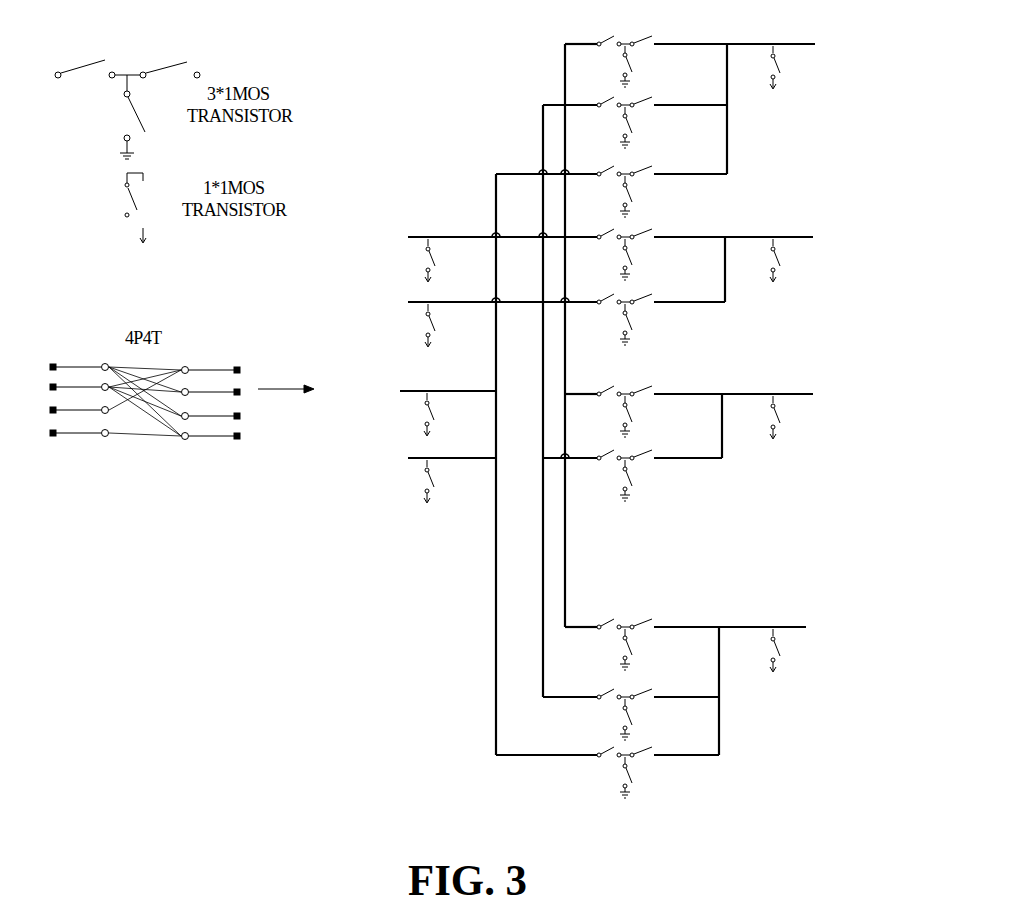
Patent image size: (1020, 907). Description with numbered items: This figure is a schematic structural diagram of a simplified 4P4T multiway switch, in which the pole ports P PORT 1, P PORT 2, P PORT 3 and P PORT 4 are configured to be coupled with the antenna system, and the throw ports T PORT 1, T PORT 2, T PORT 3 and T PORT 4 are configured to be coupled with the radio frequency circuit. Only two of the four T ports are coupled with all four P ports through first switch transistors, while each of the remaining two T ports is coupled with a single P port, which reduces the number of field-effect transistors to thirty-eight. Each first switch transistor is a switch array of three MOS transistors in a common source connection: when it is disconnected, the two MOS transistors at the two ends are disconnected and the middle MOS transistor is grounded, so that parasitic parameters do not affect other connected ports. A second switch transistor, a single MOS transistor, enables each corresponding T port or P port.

The port 1 (T PORT 1 / P PORT 1) 1 is at (611, 139).
The port 2 (T PORT 2 / P PORT 2) 2 is at (610, 268).
The port 3 (T PORT 3 / P PORT 3) 3 is at (610, 391).
The port 4 (T PORT 4 / P PORT 4) 4 is at (608, 541).